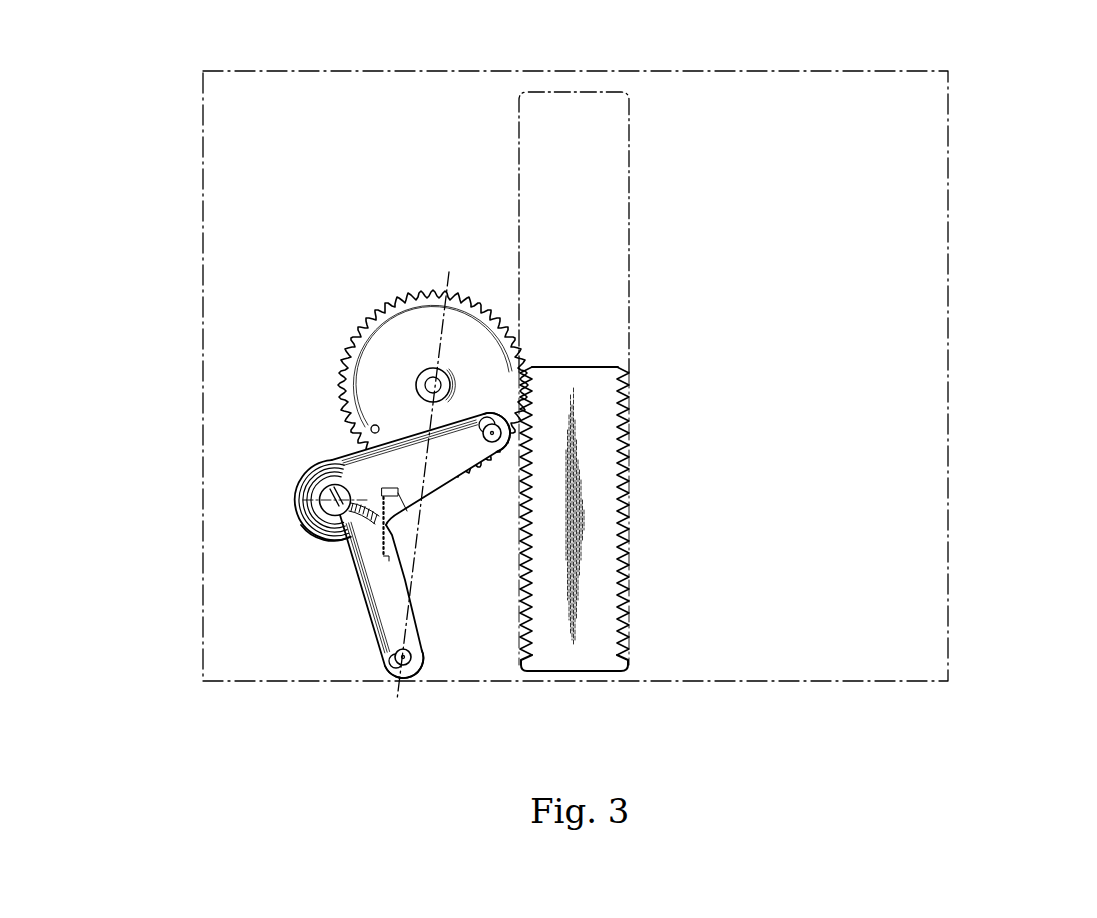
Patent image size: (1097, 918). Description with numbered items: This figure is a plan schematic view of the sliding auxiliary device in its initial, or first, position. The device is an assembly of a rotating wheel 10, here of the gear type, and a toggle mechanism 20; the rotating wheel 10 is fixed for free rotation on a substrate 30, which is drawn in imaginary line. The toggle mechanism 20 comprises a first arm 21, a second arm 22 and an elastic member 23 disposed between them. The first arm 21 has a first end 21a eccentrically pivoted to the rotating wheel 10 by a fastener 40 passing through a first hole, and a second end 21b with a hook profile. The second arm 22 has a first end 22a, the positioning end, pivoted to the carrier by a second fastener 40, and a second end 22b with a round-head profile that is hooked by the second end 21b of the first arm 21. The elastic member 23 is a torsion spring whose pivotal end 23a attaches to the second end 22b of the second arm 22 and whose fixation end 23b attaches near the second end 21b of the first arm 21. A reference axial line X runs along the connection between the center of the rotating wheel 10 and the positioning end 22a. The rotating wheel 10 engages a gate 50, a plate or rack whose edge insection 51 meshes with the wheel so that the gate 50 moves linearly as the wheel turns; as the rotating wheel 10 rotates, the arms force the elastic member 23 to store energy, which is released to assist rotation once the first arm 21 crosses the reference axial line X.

The rotating wheel 10 is at (400, 332).
The toggle mechanism 20 is at (312, 524).
The first arm 21 is at (386, 472).
The first end of the first arm 21a is at (491, 455).
The second end of the first arm 21b is at (345, 450).
The second arm 22 is at (343, 596).
The first end of the second arm 22a is at (386, 646).
The second end of the second arm 22b is at (320, 543).
The elastic member 23 is at (300, 492).
The pivotal end 23a is at (306, 522).
The fixation end 23b is at (413, 505).
The substrate 30 is at (915, 596).
The fastener 40 is at (497, 410).
The gate 50 is at (580, 388).
The insection 51 is at (630, 500).
The reference axial line X is at (425, 473).